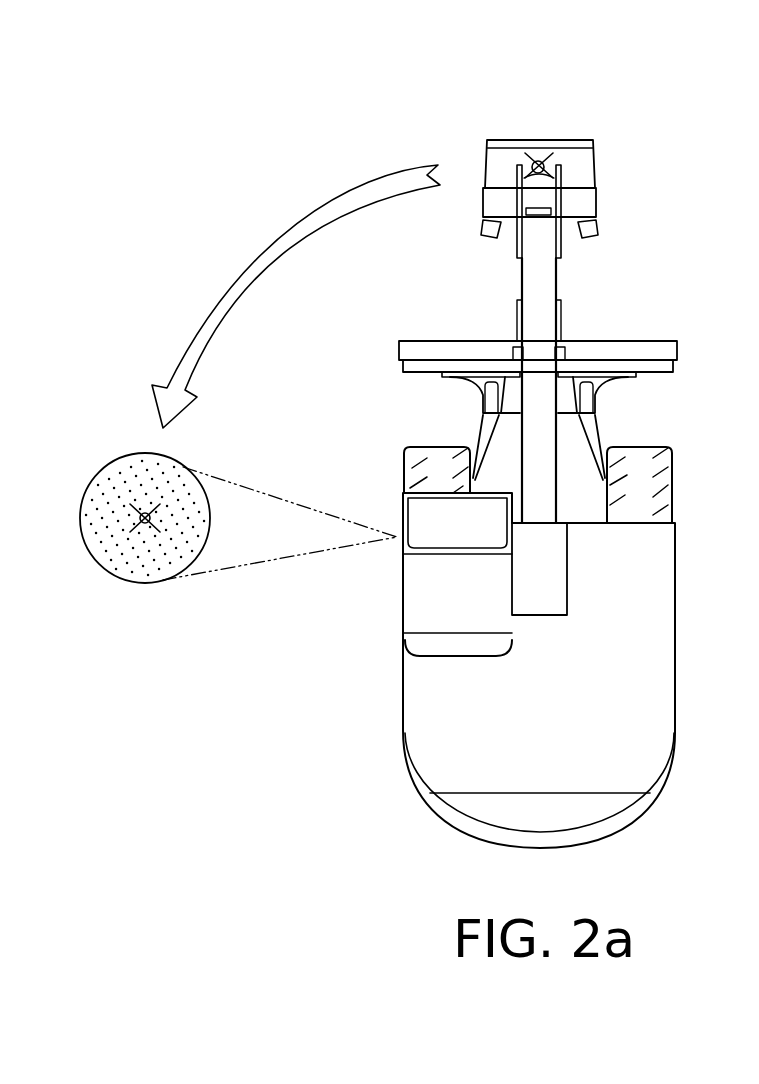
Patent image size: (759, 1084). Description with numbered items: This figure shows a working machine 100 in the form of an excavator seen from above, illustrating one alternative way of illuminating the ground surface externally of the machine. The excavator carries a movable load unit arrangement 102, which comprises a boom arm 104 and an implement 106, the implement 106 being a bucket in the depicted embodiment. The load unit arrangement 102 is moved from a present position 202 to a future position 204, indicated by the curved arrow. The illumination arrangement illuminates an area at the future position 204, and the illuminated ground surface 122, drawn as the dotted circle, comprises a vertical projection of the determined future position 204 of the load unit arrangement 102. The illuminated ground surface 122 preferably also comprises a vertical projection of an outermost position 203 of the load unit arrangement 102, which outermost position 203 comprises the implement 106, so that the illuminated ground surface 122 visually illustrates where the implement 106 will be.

The working machine 100 is at (460, 722).
The movable load unit arrangement 102 is at (590, 267).
The boom arm 104 is at (538, 320).
The implement 106 is at (594, 150).
The illuminated ground surface 122 is at (136, 561).
The present position 202 is at (538, 160).
The outermost position 203 is at (510, 140).
The future position 204 is at (143, 527).